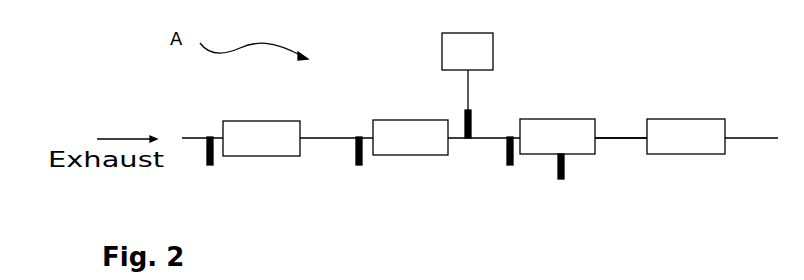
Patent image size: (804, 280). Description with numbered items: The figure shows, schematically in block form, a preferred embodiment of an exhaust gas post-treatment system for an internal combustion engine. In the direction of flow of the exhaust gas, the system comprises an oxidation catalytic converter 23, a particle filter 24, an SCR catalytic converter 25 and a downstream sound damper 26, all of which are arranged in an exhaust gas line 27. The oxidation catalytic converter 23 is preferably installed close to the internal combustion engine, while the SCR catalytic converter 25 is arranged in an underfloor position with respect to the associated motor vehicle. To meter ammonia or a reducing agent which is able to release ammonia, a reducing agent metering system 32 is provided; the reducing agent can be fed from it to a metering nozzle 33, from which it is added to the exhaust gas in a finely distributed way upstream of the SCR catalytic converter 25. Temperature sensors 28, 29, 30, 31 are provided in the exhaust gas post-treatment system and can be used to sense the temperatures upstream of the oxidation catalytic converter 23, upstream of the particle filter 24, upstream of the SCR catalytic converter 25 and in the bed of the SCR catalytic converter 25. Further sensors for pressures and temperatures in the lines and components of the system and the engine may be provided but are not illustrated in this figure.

The oxidation catalytic converter 23 is at (252, 149).
The particle filter 24 is at (400, 149).
The SCR catalytic converter 25 is at (547, 149).
The sound damper 26 is at (676, 149).
The exhaust gas line 27 is at (626, 138).
The temperature sensor 28 is at (218, 166).
The temperature sensor 29 is at (367, 167).
The temperature sensor 30 is at (503, 159).
The temperature sensor 31 is at (558, 179).
The reducing agent metering system 32 is at (457, 60).
The metering nozzle 33 is at (473, 117).